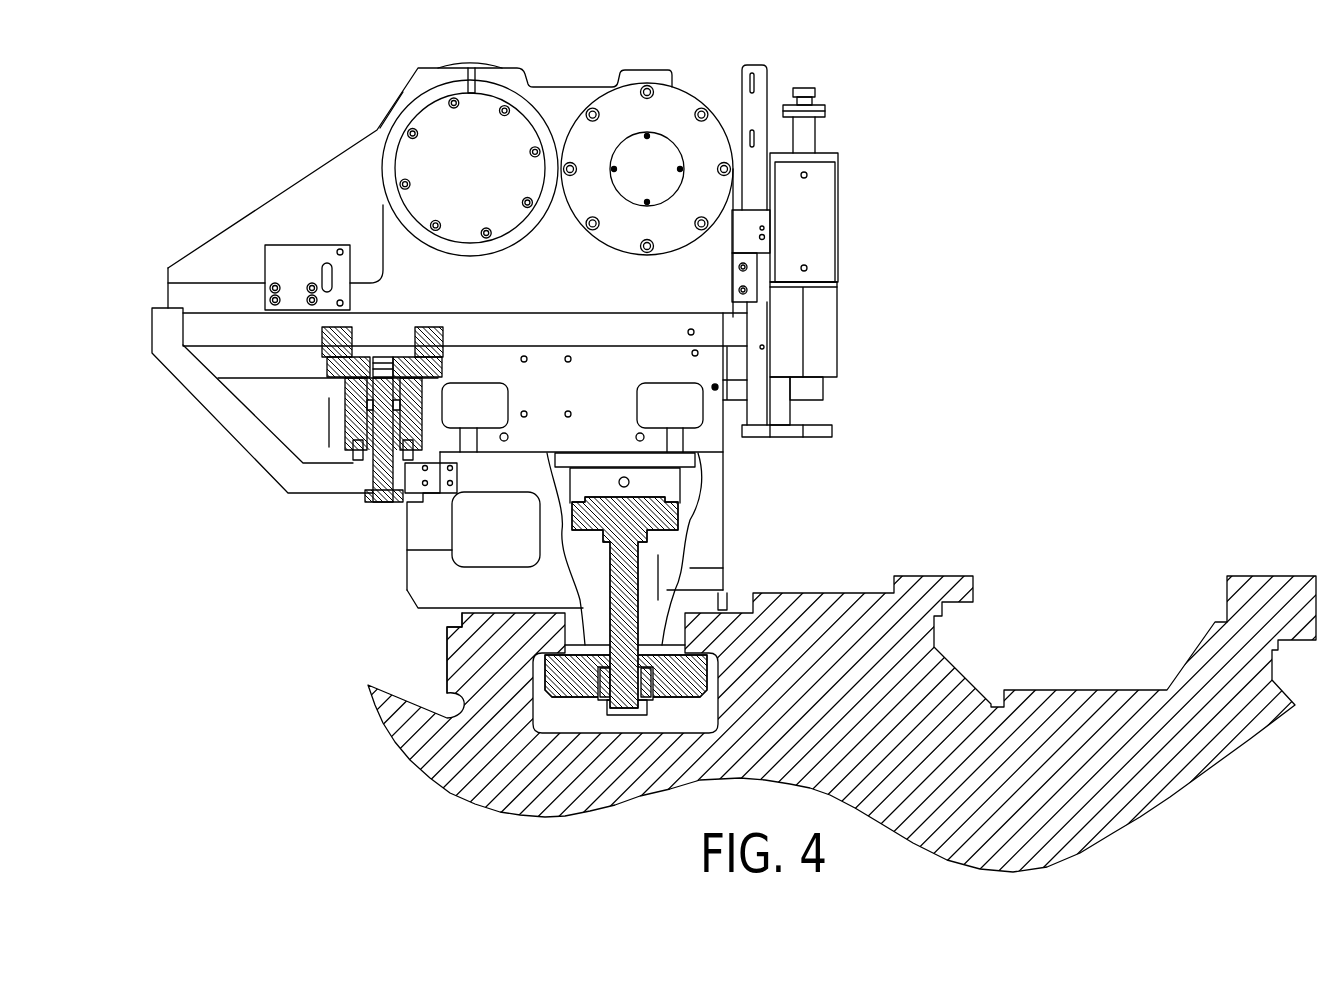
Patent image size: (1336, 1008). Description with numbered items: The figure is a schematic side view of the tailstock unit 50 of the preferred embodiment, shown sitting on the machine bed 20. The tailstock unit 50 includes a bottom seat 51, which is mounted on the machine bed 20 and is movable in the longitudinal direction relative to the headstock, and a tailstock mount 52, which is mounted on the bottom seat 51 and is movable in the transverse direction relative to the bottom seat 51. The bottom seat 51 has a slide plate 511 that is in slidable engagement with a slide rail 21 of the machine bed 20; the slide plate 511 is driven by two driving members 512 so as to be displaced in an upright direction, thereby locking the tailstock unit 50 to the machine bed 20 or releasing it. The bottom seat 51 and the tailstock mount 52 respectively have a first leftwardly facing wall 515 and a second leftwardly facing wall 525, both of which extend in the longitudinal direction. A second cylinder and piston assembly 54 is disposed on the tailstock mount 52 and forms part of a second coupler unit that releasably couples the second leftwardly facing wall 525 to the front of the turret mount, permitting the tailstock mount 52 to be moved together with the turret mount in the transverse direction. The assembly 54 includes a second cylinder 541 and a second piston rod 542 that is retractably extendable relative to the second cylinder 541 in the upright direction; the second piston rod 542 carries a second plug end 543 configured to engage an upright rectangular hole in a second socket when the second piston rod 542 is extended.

The machine bed 20 is at (1265, 542).
The slide rail 21 is at (462, 658).
The tailstock unit 50 is at (549, 422).
The bottom seat 51 is at (571, 548).
The slide plate 511 is at (570, 680).
The driving member 512 is at (660, 517).
The first leftwardly facing wall 515 is at (725, 545).
The tailstock mount 52 is at (235, 247).
The second leftwardly facing wall 525 is at (732, 210).
The second cylinder and piston assembly 54 is at (864, 267).
The second cylinder 541 is at (817, 237).
The second piston rod 542 is at (812, 385).
The second plug end 543 is at (810, 402).